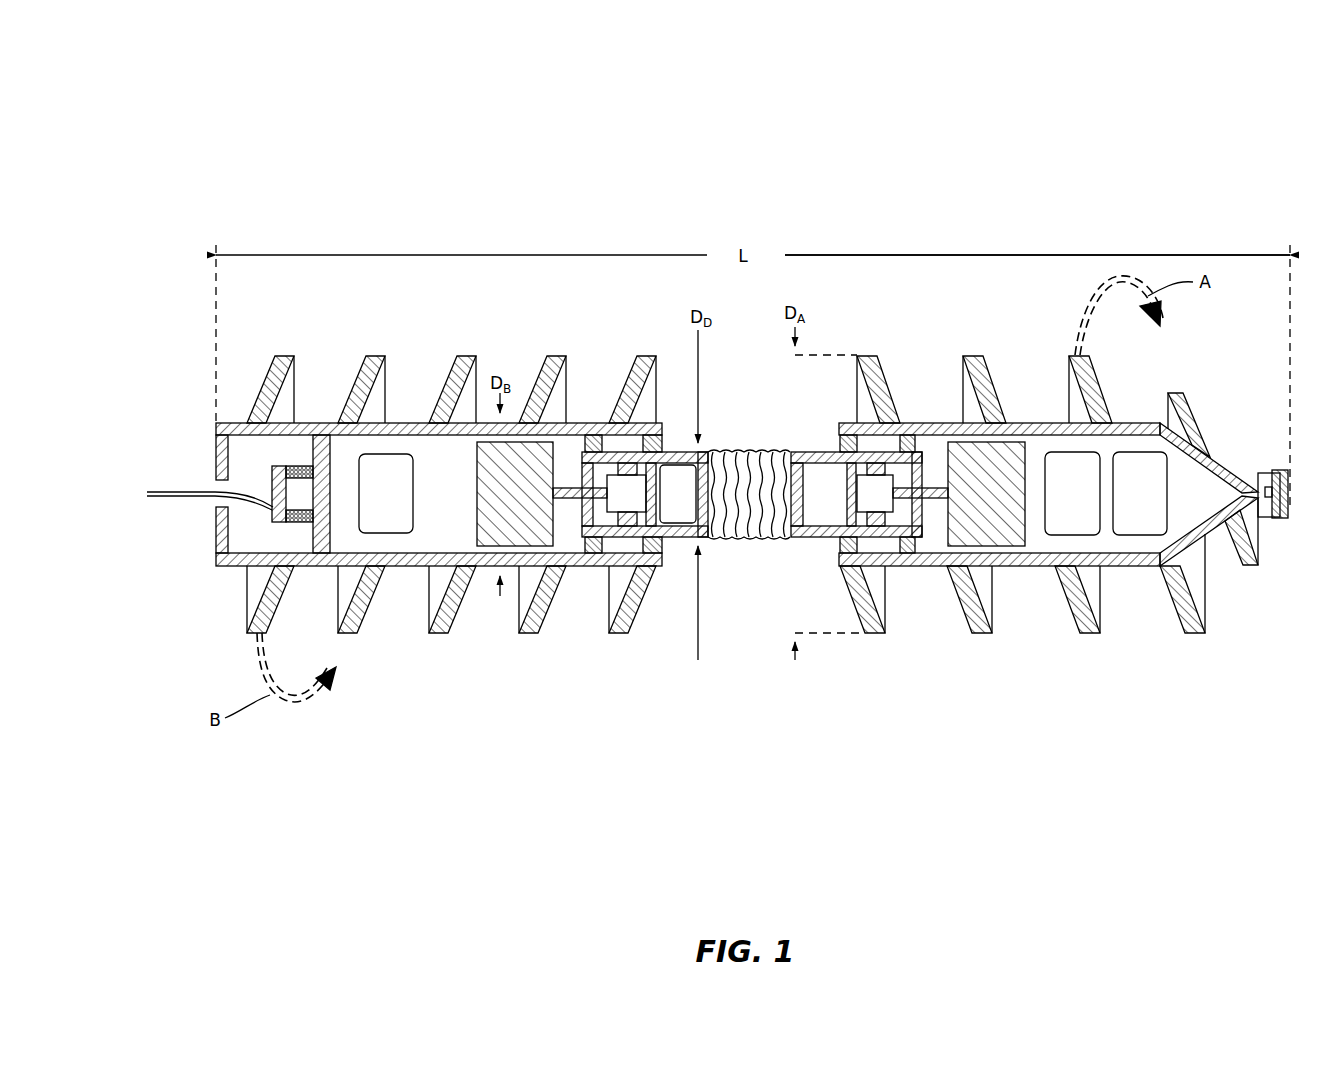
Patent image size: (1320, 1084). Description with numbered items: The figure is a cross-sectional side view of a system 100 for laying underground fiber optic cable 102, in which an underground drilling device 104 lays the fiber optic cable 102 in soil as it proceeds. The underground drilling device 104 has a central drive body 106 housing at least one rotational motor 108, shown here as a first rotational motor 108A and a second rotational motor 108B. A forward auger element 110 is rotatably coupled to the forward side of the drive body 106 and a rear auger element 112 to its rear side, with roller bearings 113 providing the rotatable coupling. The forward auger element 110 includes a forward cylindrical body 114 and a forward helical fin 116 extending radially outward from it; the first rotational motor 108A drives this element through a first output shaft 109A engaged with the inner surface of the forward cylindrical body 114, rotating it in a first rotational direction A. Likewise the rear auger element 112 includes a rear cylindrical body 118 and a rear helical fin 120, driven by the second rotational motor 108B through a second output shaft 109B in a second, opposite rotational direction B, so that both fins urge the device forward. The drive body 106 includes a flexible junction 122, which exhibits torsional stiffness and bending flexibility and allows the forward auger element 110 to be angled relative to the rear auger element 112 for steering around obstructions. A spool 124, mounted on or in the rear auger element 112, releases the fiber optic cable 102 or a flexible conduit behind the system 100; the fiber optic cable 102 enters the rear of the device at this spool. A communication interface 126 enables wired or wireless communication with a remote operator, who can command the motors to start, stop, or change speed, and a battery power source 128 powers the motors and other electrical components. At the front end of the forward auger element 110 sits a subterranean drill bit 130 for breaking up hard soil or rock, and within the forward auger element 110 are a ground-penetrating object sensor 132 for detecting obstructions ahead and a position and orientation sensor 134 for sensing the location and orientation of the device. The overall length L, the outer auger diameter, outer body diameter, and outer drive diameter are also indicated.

The system 100 is at (172, 108).
The fiber optic cable 102 is at (167, 490).
The underground drilling device 104 is at (392, 204).
The drive body 106 is at (760, 390).
The rotational motor 108 is at (587, 710).
The first rotational motor 108A is at (908, 540).
The second rotational motor 108B is at (589, 540).
The first output shaft 109A is at (893, 512).
The second output shaft 109B is at (553, 533).
The forward auger element 110 is at (992, 338).
The rear auger element 112 is at (414, 337).
The roller bearings 113 is at (908, 437).
The forward cylindrical body 114 is at (1112, 567).
The forward helical fin 116 is at (985, 632).
The rear cylindrical body 118 is at (412, 565).
The rear helical fin 120 is at (447, 633).
The flexible junction 122 is at (765, 537).
The spool 124 is at (267, 513).
The communication interface 126 is at (683, 476).
The battery power source 128 is at (386, 493).
The subterranean drill bit 130 is at (1276, 470).
The ground-penetrating object sensor 132 is at (1140, 493).
The position and orientation sensor 134 is at (1072, 493).